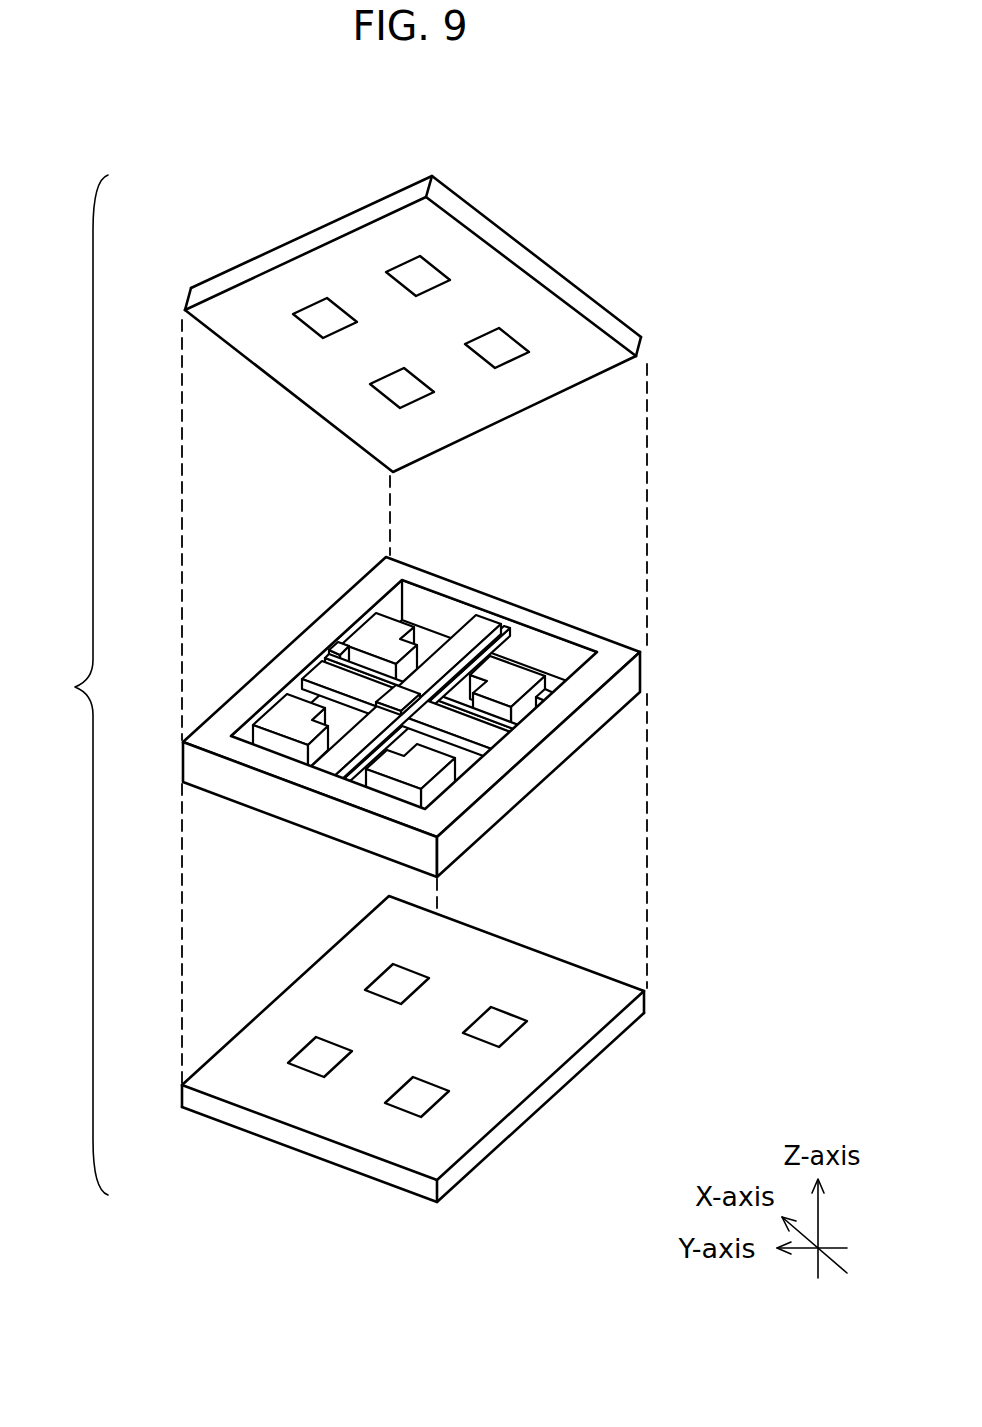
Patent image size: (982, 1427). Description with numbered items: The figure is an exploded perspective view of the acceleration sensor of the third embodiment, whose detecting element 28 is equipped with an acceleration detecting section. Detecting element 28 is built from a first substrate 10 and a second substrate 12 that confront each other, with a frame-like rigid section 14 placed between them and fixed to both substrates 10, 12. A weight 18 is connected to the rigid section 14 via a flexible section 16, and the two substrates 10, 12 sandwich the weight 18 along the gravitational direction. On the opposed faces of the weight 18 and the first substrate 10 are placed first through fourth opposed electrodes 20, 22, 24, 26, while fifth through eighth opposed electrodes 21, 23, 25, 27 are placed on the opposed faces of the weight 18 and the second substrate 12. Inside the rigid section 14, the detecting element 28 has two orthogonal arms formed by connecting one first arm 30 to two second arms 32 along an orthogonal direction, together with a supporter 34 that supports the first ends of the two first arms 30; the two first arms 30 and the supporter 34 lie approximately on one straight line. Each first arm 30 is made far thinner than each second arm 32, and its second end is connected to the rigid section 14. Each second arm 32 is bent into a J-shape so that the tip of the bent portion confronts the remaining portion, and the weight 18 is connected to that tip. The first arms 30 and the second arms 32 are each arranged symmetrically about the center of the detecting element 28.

The first substrate 10 is at (505, 1105).
The second substrate 12 is at (548, 277).
The rigid section 14 is at (414, 697).
The flexible section 16 is at (333, 647).
The weight 18 is at (383, 627).
The first opposed electrode 20 is at (310, 1063).
The fifth opposed electrode 21 is at (320, 318).
The second opposed electrode 22 is at (408, 1102).
The sixth opposed electrode 23 is at (415, 277).
The third opposed electrode 24 is at (392, 980).
The seventh opposed electrode 25 is at (402, 385).
The fourth opposed electrode 26 is at (507, 1023).
The eighth opposed electrode 27 is at (497, 345).
The detecting element 28 is at (70, 685).
The first arm 30 is at (303, 653).
The second arm 32 is at (461, 670).
The supporter 34 is at (300, 736).